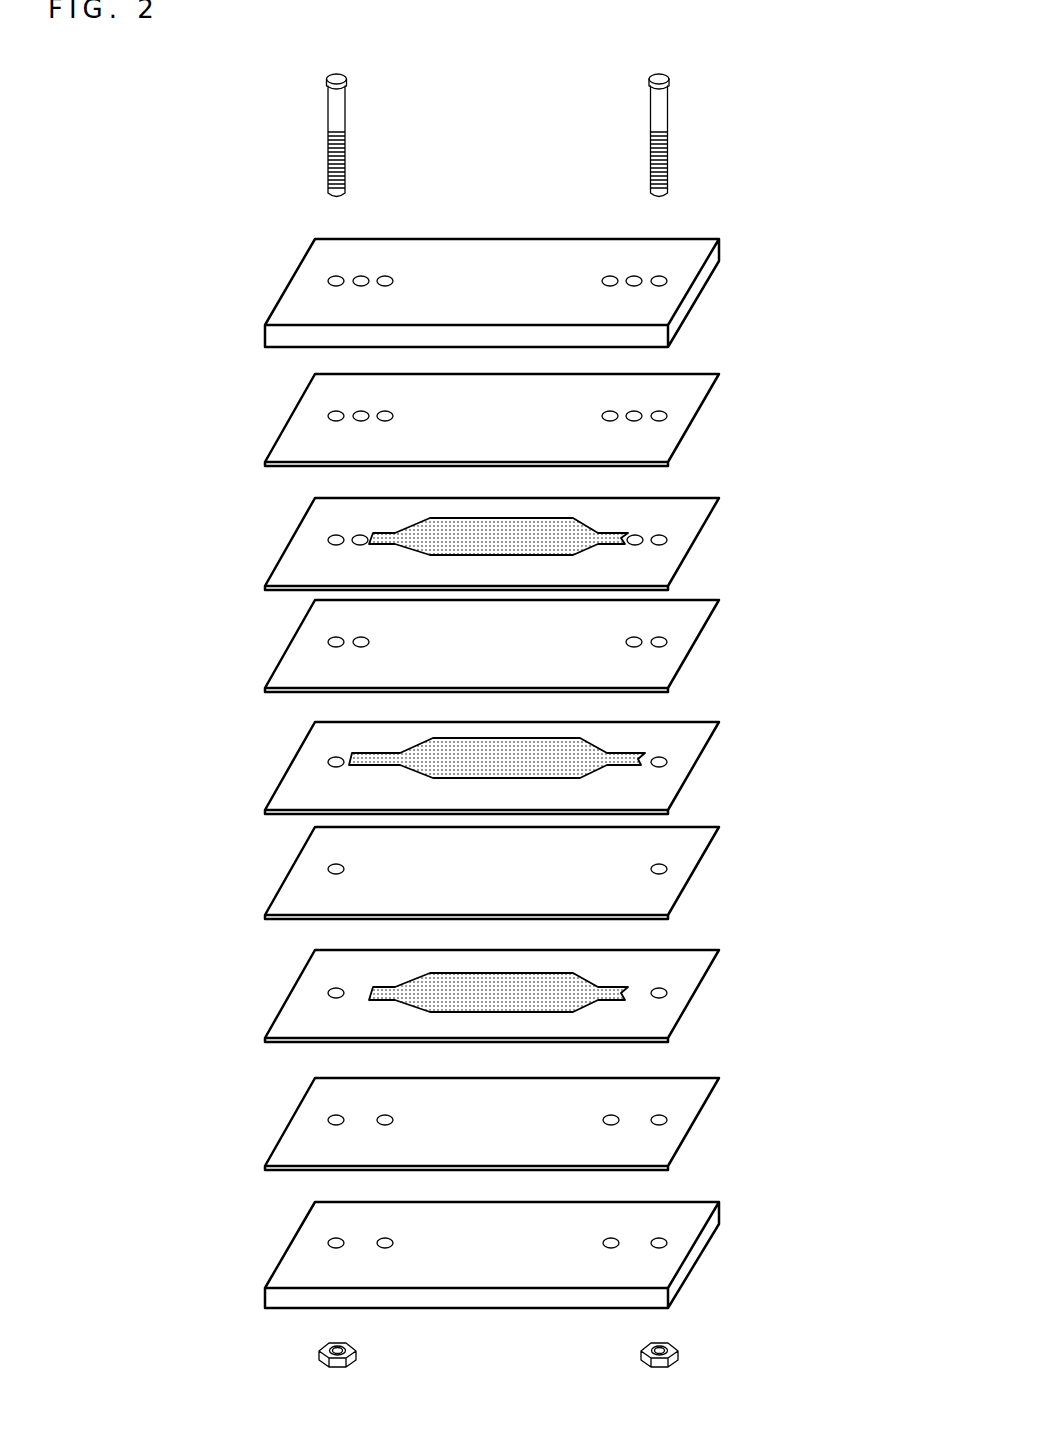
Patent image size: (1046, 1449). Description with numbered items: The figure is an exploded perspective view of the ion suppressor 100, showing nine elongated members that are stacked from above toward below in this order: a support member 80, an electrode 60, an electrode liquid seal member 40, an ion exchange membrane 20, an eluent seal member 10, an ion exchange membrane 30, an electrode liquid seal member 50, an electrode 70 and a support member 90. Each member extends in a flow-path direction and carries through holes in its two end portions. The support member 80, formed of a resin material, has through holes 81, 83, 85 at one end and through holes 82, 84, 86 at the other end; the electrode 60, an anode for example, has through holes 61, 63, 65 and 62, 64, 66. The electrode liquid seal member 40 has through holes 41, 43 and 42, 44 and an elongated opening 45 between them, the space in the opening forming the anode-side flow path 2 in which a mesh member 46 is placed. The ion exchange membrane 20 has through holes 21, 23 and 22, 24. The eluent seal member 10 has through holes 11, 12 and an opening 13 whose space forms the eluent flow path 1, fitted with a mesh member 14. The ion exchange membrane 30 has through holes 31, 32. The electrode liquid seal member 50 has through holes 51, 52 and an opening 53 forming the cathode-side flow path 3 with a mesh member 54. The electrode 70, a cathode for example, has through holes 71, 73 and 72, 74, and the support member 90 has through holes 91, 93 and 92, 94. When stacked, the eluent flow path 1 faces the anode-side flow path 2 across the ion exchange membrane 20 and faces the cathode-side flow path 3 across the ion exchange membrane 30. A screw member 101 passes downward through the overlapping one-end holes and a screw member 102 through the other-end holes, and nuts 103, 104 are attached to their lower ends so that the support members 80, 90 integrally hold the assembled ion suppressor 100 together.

The ion suppressor 100 is at (843, 113).
The screw member 101 is at (327, 127).
The screw member 102 is at (668, 123).
The nut 103 is at (318, 1347).
The nut 104 is at (680, 1347).
The support member 80 is at (284, 296).
The through hole 81 is at (336, 276).
The through hole 82 is at (660, 276).
The through hole 83 is at (362, 276).
The through hole 84 is at (634, 276).
The through hole 85 is at (393, 281).
The through hole 86 is at (602, 281).
The electrode 60 is at (284, 431).
The through hole 61 is at (336, 411).
The through hole 62 is at (660, 411).
The through hole 63 is at (362, 411).
The through hole 64 is at (634, 411).
The through hole 65 is at (393, 416).
The through hole 66 is at (602, 416).
The electrode liquid seal member 40 is at (284, 555).
The through hole 41 is at (336, 535).
The through hole 42 is at (660, 535).
The through hole 43 is at (360, 545).
The through hole 44 is at (638, 545).
The opening 45 is at (621, 535).
The mesh member 46 is at (500, 528).
The anode-side flow path 2 is at (541, 541).
The ion exchange membrane 20 is at (284, 657).
The through hole 21 is at (336, 637).
The through hole 22 is at (660, 637).
The through hole 23 is at (362, 637).
The through hole 24 is at (634, 637).
The eluent seal member 10 is at (284, 779).
The through hole 11 is at (336, 757).
The through hole 12 is at (660, 757).
The opening 13 is at (633, 755).
The mesh member 14 is at (500, 752).
The eluent flow path 1 is at (541, 763).
The ion exchange membrane 30 is at (284, 884).
The through hole 31 is at (336, 864).
The through hole 32 is at (660, 864).
The electrode liquid seal member 50 is at (284, 1007).
The through hole 51 is at (336, 988).
The through hole 52 is at (660, 988).
The opening 53 is at (621, 988).
The mesh member 54 is at (500, 983).
The cathode-side flow path 3 is at (541, 994).
The electrode 70 is at (284, 1135).
The through hole 71 is at (336, 1115).
The through hole 72 is at (660, 1115).
The through hole 73 is at (387, 1115).
The through hole 74 is at (611, 1115).
The support member 90 is at (284, 1259).
The through hole 91 is at (336, 1238).
The through hole 92 is at (660, 1238).
The through hole 93 is at (387, 1238).
The through hole 94 is at (611, 1238).